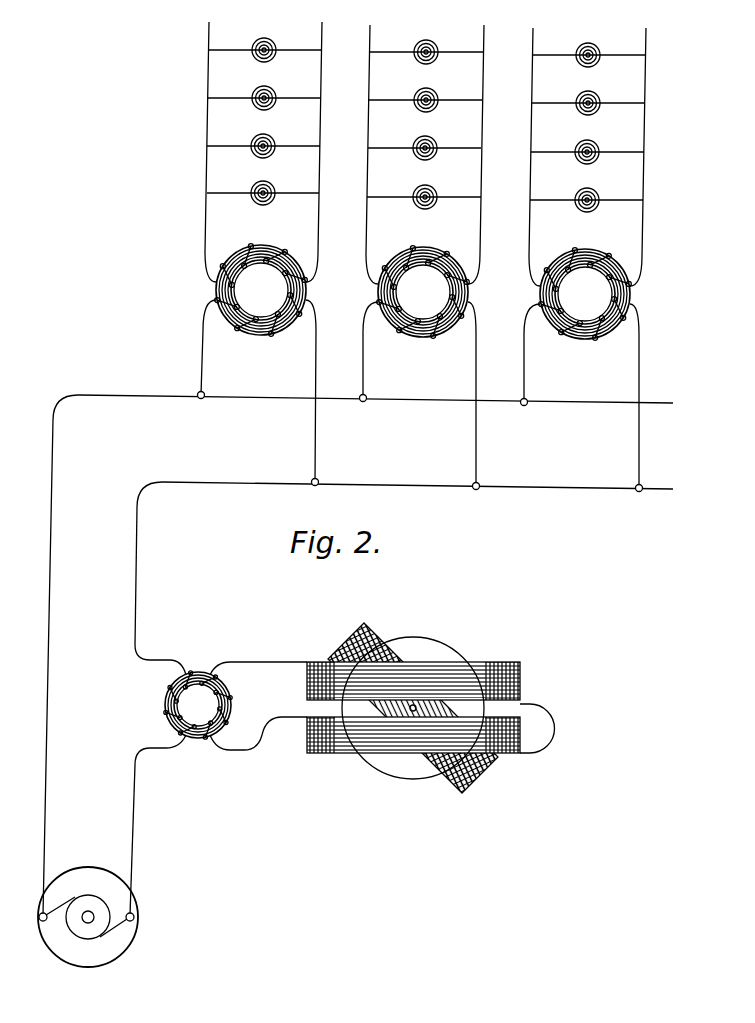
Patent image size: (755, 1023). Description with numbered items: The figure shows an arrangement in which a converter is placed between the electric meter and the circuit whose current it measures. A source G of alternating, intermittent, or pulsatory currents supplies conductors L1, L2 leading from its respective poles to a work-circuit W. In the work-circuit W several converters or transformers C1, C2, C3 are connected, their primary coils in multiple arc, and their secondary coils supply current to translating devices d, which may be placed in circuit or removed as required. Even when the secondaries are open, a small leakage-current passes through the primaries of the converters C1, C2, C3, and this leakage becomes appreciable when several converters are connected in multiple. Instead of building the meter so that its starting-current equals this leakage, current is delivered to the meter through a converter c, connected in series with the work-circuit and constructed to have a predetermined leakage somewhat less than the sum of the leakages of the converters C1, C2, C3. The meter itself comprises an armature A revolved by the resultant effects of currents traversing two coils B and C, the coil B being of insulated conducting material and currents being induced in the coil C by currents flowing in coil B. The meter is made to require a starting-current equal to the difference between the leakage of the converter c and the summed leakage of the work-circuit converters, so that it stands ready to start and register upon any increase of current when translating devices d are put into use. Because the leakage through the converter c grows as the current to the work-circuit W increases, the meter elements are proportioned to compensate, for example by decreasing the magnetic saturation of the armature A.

The translating devices d is at (426, 118).
The converter C1 is at (261, 252).
The converter C2 is at (423, 255).
The converter C3 is at (585, 258).
The work-circuit W is at (363, 450).
The converter c is at (221, 705).
The coil C is at (413, 701).
The coil B is at (431, 707).
The armature A is at (413, 720).
The conductor L1 is at (122, 711).
The conductor L2 is at (58, 667).
The source of electric currents G is at (88, 928).